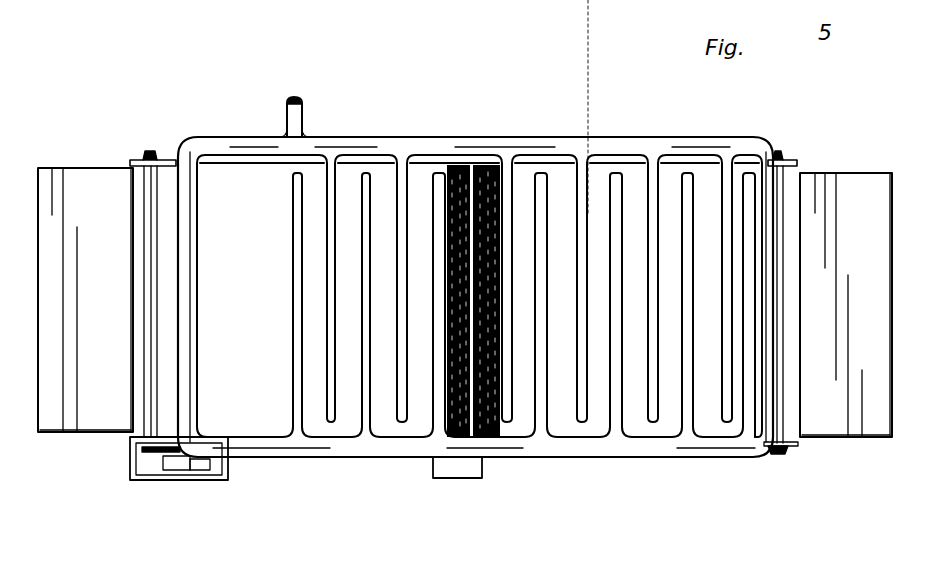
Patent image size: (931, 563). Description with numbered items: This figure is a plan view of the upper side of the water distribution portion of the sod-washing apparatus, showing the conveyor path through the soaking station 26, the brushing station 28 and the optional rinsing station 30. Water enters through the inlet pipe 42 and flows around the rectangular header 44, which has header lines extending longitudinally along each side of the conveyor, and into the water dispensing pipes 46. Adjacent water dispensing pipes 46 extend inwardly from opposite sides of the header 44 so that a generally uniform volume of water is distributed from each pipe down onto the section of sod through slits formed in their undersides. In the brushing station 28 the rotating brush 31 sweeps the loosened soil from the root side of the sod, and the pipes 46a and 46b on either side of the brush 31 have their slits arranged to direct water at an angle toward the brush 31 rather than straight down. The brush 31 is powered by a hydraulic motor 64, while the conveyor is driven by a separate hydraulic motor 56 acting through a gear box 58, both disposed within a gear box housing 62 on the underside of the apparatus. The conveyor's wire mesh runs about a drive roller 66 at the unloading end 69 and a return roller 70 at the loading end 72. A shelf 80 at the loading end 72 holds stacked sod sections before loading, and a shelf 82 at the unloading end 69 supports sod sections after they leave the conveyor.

The soaking station 26 is at (725, 128).
The brushing station 28 is at (515, 128).
The rinsing station 30 is at (410, 128).
The rotating brush 31 is at (502, 162).
The inlet pipe 42 is at (282, 110).
The rectangular header 44 is at (186, 152).
The water dispensing pipes 46 is at (400, 203).
The water dispensing pipe 46a is at (447, 398).
The water dispensing pipe 46b is at (577, 481).
The hydraulic motor 56 is at (230, 462).
The gear box 58 is at (177, 467).
The gear box housing 62 is at (138, 472).
The hydraulic motor 64 is at (472, 470).
The drive roller 66 is at (153, 320).
The unloading end 69 is at (36, 432).
The return roller 70 is at (784, 314).
The loading end 72 is at (893, 428).
The shelf 80 is at (865, 177).
The shelf 82 is at (93, 175).